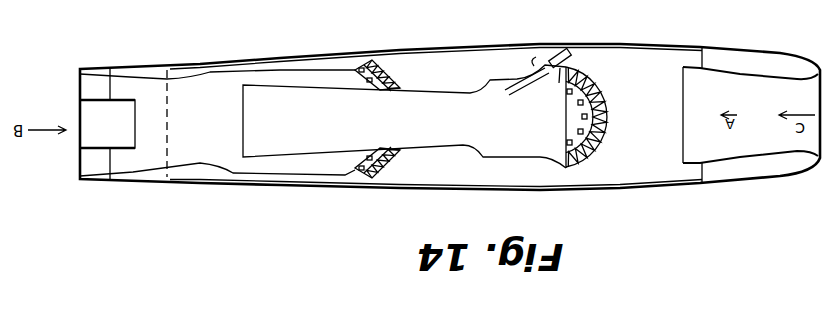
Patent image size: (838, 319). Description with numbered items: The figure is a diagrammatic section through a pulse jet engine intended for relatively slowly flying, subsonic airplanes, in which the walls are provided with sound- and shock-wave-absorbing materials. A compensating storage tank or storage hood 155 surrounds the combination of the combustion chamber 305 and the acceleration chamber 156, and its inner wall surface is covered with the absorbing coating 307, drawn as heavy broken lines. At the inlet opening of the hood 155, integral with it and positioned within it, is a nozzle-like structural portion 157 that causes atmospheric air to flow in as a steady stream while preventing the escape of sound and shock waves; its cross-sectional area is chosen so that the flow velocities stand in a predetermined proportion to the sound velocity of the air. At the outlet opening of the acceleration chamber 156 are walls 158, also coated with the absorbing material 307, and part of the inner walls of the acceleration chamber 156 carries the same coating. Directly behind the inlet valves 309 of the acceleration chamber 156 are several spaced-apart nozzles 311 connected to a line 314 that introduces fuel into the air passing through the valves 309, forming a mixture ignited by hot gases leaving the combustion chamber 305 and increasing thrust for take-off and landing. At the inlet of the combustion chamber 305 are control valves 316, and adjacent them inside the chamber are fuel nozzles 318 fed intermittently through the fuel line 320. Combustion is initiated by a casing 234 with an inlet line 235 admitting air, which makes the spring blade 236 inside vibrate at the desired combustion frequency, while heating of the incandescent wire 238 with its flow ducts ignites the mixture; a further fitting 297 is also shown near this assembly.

The storage hood 155 is at (474, 189).
The acceleration chamber 156 is at (217, 154).
The nozzle-like structural portion 157 is at (733, 158).
The walls 158 is at (97, 152).
The casing 234 is at (573, 58).
The inlet line 235 is at (560, 45).
The spring blade 236 is at (547, 56).
The incandescent wire 238 is at (516, 78).
The fitting 297 is at (571, 62).
The combustion chamber 305 is at (470, 145).
The absorbing coating 307 is at (82, 104).
The inlet valves 309 is at (390, 172).
The nozzles 311 is at (357, 174).
The line 314 is at (352, 68).
The control valves 316 is at (607, 128).
The fuel nozzles 318 is at (578, 168).
The fuel line 320 is at (559, 84).